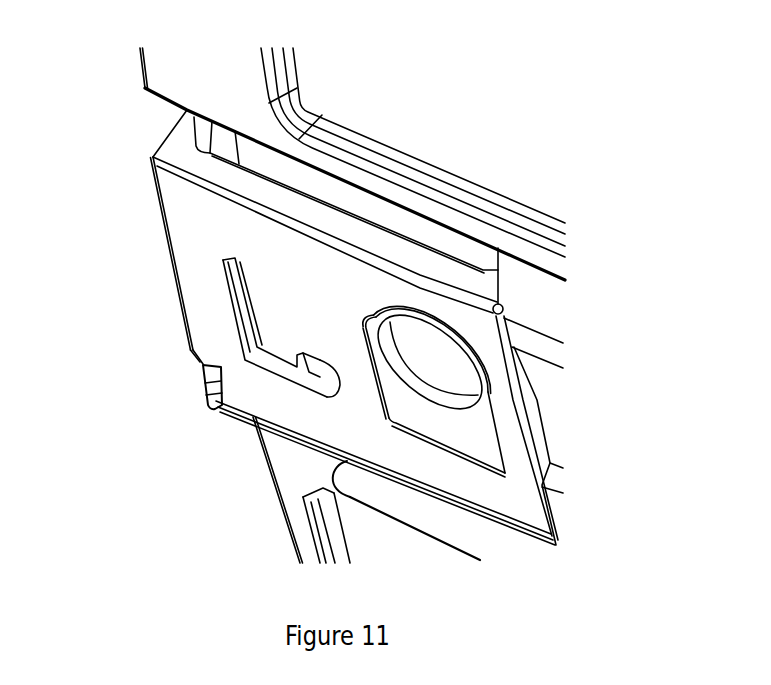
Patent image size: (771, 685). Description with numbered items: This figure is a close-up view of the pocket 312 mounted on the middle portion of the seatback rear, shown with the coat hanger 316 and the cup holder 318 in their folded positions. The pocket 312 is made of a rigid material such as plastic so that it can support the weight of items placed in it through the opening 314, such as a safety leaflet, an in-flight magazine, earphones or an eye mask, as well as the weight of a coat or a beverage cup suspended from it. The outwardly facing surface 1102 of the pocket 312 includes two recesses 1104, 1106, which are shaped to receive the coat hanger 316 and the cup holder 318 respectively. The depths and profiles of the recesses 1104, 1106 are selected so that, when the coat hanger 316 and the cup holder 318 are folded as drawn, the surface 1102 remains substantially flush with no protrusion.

The pocket 312 is at (294, 327).
The opening 314 is at (257, 153).
The coat hanger 316 is at (191, 361).
The cup holder 318 is at (460, 430).
The outwardly facing surface 1102 is at (212, 313).
The recess 1104 is at (332, 385).
The recess 1106 is at (399, 430).